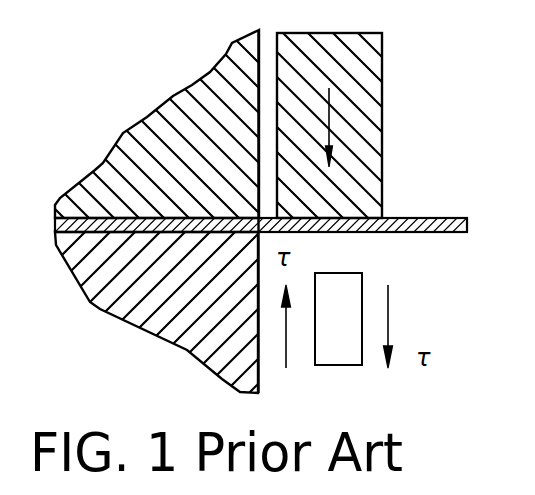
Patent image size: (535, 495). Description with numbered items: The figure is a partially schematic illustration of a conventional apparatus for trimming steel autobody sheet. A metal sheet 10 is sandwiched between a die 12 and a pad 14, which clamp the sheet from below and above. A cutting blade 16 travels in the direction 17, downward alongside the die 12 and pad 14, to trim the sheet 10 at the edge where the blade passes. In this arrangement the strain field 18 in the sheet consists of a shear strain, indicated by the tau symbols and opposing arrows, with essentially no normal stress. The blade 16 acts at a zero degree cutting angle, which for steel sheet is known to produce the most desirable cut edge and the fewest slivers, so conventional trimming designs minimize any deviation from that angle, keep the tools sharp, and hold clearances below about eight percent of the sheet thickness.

The metal sheet 10 is at (426, 218).
The die 12 is at (138, 320).
The pad 14 is at (137, 138).
The cutting blade 16 is at (383, 65).
The direction 17 is at (330, 128).
The strain field 18 is at (360, 283).